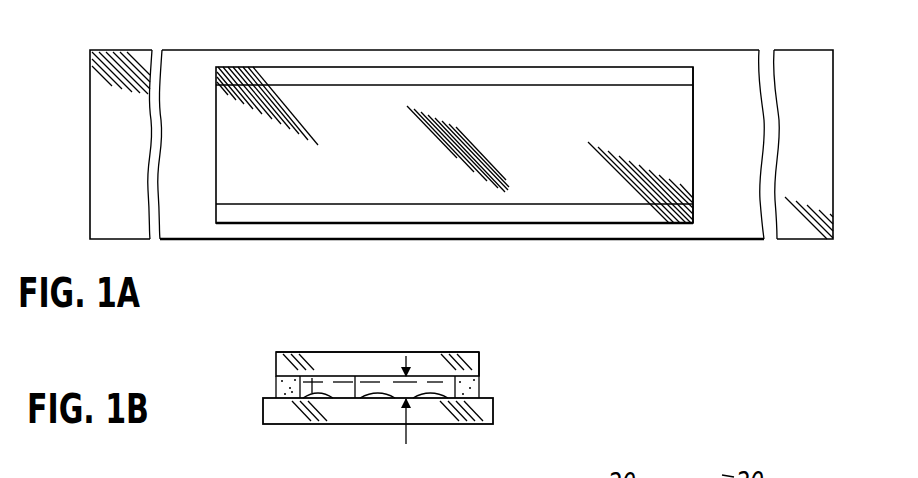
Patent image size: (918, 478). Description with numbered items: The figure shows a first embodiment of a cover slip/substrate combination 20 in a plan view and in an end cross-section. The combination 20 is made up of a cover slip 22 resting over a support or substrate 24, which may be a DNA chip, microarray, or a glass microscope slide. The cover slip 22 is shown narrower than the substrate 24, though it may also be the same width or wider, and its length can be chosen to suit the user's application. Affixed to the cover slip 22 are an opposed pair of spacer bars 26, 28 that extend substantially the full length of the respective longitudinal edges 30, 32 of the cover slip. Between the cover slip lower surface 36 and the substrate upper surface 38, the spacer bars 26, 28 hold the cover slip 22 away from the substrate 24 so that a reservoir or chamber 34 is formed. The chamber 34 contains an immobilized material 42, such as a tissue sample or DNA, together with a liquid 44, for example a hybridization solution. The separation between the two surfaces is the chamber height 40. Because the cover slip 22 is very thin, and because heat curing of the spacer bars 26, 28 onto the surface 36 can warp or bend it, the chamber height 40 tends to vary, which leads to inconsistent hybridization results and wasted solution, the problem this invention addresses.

In FIG. 1A, the cover slip/substrate combination 20 is at (461, 156).
In FIG. 1B, the cover slip/substrate combination 20 is at (398, 383).
In FIG. 1A, the cover slip 22 is at (566, 227).
In FIG. 1B, the cover slip 22 is at (294, 350).
In FIG. 1A, the substrate 24 is at (200, 50).
In FIG. 1B, the substrate 24 is at (483, 425).
In FIG. 1A, the spacer bar 26 is at (625, 205).
In FIG. 1B, the spacer bar 26 is at (276, 387).
In FIG. 1A, the spacer bar 28 is at (645, 86).
In FIG. 1B, the spacer bar 28 is at (481, 396).
In FIG. 1A, the longitudinal edge 30 is at (338, 228).
In FIG. 1B, the longitudinal edge 30 is at (275, 366).
In FIG. 1A, the longitudinal edge 32 is at (583, 67).
In FIG. 1B, the longitudinal edge 32 is at (481, 366).
In FIG. 1B, the chamber 34 is at (357, 377).
In FIG. 1B, the cover slip lower surface 36 is at (353, 398).
In FIG. 1B, the substrate upper surface 38 is at (345, 395).
In FIG. 1B, the chamber height 40 is at (409, 438).
In FIG. 1B, the immobilized material 42 is at (378, 397).
In FIG. 1B, the liquid 44 is at (315, 384).